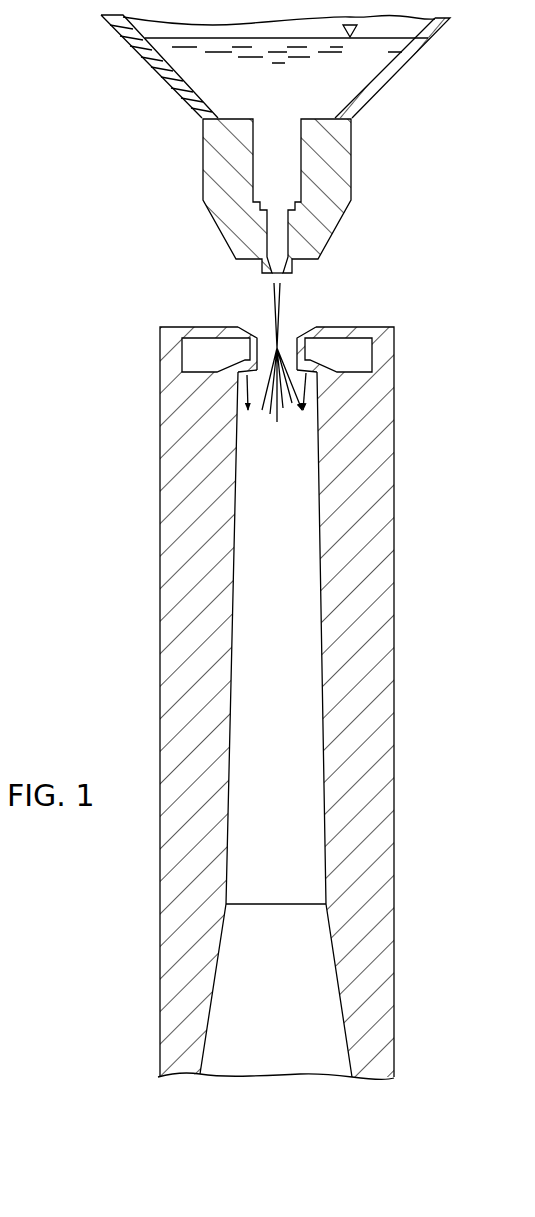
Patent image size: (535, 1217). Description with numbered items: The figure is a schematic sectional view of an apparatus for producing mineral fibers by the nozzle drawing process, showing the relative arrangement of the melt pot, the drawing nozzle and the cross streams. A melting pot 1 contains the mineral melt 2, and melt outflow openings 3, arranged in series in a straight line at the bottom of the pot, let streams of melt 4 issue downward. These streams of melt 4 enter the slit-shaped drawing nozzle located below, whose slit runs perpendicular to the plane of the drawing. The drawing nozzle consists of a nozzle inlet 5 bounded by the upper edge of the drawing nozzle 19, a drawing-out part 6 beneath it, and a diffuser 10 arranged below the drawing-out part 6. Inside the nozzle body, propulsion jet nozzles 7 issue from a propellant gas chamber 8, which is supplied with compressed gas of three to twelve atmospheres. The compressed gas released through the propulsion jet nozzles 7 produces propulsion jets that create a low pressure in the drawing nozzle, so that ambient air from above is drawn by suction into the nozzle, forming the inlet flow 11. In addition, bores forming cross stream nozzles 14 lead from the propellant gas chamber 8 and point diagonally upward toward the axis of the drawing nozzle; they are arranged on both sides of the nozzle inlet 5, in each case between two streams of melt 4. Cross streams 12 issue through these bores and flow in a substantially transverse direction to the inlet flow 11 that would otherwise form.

The melting pot 1 is at (163, 72).
The mineral melt 2 is at (366, 60).
The melt outflow opening 3 is at (282, 278).
The stream of melt 4 is at (283, 287).
The nozzle inlet 5 is at (288, 320).
The drawing-out part 6 is at (308, 535).
The propulsion jet nozzle 7 is at (315, 365).
The propellant gas chamber 8 is at (363, 355).
The diffuser 10 is at (317, 988).
The inlet flow 11 is at (257, 307).
The cross stream 12 is at (268, 313).
The cross stream nozzle 14 is at (242, 328).
The upper edge of the drawing nozzle 19 is at (371, 324).